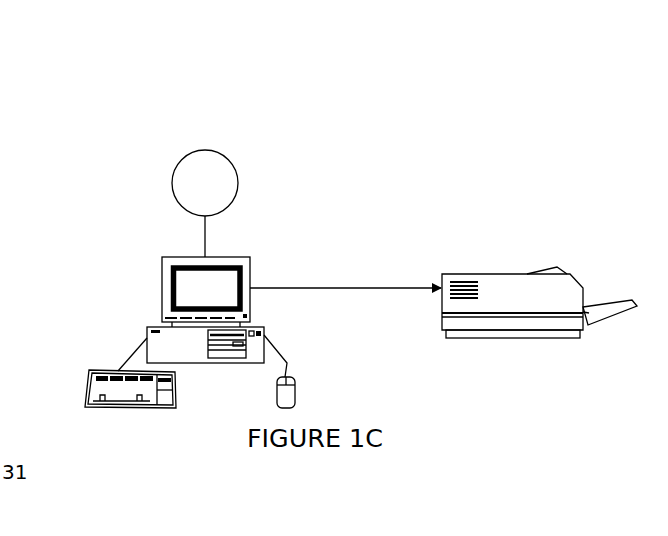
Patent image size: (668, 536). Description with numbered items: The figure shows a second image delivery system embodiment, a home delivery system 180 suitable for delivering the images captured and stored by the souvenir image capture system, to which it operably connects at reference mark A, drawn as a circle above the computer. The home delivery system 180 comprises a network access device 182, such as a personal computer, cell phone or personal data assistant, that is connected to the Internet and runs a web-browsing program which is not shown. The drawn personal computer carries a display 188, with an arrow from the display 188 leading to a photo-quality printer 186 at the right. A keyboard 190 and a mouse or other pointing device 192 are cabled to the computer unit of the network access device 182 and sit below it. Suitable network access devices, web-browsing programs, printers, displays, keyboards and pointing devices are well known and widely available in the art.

The home delivery system 180 is at (329, 128).
The network access device 182 is at (161, 282).
The photo-quality printer 186 is at (509, 272).
The display 188 is at (258, 249).
The keyboard 190 is at (90, 388).
The mouse or other pointing device 192 is at (295, 387).